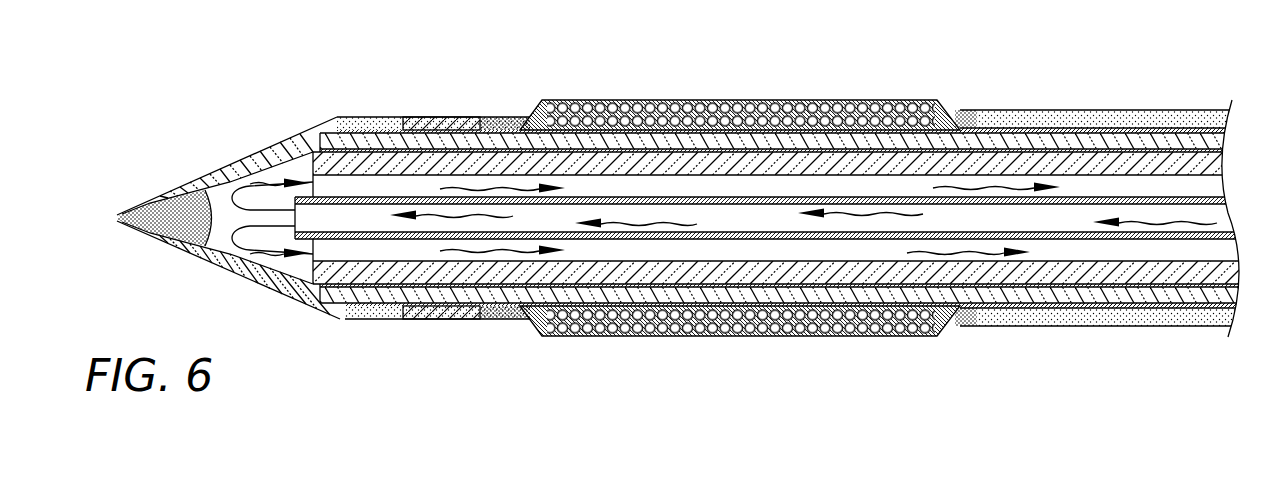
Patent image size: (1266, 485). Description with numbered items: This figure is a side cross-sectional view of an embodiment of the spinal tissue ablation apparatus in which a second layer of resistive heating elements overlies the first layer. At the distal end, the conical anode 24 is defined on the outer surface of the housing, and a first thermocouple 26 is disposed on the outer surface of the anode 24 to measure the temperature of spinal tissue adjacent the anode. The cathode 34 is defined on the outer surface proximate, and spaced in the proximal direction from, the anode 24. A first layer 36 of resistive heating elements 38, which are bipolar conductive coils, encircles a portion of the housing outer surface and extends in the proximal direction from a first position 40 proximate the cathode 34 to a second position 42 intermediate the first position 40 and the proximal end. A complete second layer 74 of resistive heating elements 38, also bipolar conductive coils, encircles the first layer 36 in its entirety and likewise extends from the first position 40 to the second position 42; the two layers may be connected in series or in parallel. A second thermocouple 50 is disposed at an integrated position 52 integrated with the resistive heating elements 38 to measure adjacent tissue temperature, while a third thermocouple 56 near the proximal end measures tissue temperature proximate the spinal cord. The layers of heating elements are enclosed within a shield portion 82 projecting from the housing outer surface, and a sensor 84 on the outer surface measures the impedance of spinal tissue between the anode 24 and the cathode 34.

The anode 24 is at (202, 184).
The first thermocouple 26 is at (117, 217).
The cathode 34 is at (437, 128).
The first layer 36 is at (545, 126).
The resistive heating elements 38 is at (733, 108).
The first position 40 is at (528, 128).
The second position 42 is at (962, 110).
The second thermocouple 50 is at (757, 108).
The integrated position 52 is at (775, 108).
The third thermocouple 56 is at (1042, 115).
The complete second layer 74 is at (622, 100).
The shield portion 82 is at (858, 100).
The sensor 84 is at (438, 312).